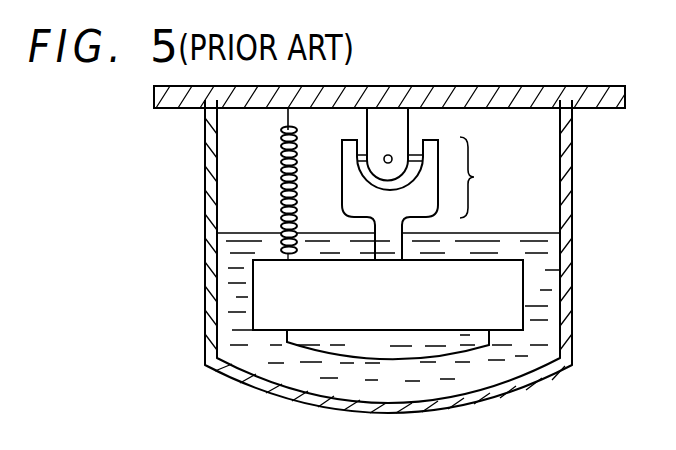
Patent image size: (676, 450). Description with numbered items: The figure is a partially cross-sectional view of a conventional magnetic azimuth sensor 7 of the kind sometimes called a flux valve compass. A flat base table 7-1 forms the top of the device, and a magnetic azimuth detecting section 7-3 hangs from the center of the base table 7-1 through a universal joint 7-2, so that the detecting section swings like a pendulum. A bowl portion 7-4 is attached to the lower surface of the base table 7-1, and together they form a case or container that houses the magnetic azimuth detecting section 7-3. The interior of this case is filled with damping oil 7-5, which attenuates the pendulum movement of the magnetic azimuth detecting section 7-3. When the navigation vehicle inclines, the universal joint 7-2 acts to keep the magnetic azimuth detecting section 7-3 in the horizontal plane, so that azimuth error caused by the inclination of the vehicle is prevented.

The magnetic azimuth sensor 7 is at (381, 66).
The base table 7-1 is at (606, 110).
The universal joint 7-2 is at (474, 177).
The magnetic azimuth detecting section 7-3 is at (513, 287).
The bowl portion 7-4 is at (528, 388).
The damping oil 7-5 is at (273, 362).